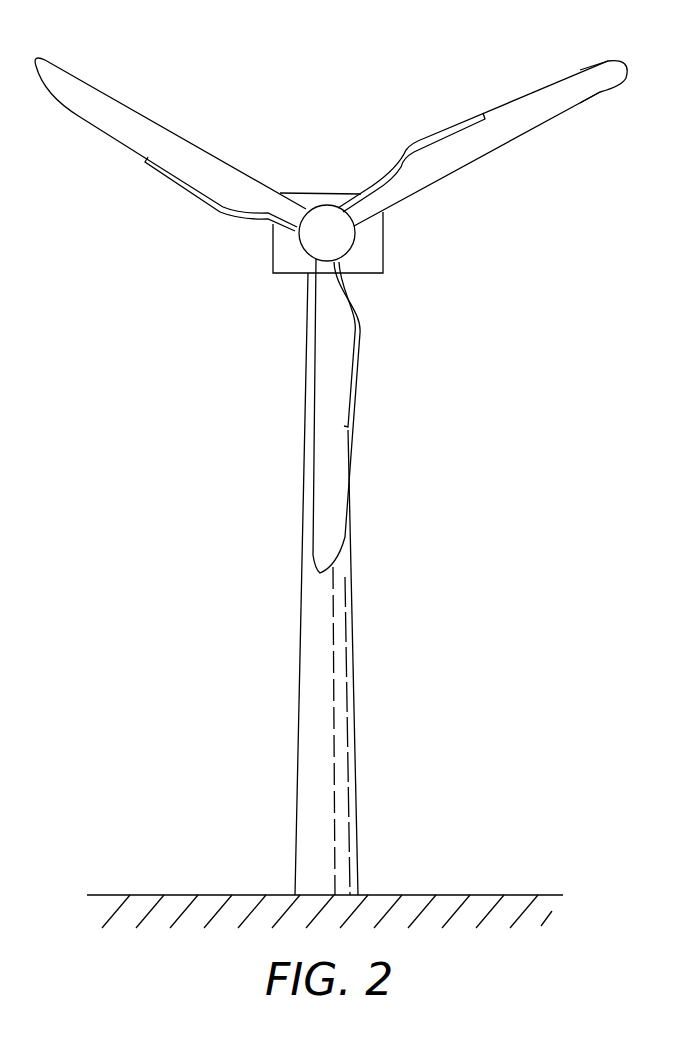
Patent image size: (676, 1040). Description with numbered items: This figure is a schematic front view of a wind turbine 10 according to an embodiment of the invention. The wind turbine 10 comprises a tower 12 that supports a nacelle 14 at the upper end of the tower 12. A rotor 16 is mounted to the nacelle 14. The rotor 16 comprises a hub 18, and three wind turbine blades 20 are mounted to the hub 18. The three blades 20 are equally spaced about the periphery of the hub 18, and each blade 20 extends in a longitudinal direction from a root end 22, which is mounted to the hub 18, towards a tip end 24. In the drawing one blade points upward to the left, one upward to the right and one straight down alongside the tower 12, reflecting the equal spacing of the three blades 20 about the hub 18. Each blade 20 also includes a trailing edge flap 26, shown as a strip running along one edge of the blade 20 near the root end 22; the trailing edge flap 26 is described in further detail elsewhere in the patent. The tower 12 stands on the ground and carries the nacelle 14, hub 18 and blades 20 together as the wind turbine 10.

The wind turbine 10 is at (236, 653).
The tower 12 is at (357, 735).
The nacelle 14 is at (370, 274).
The rotor 16 is at (228, 249).
The hub 18 is at (357, 240).
The wind turbine blade 20 is at (114, 128).
The root end 22 is at (392, 188).
The tip end 24 is at (598, 84).
The trailing edge flap 26 is at (158, 171).